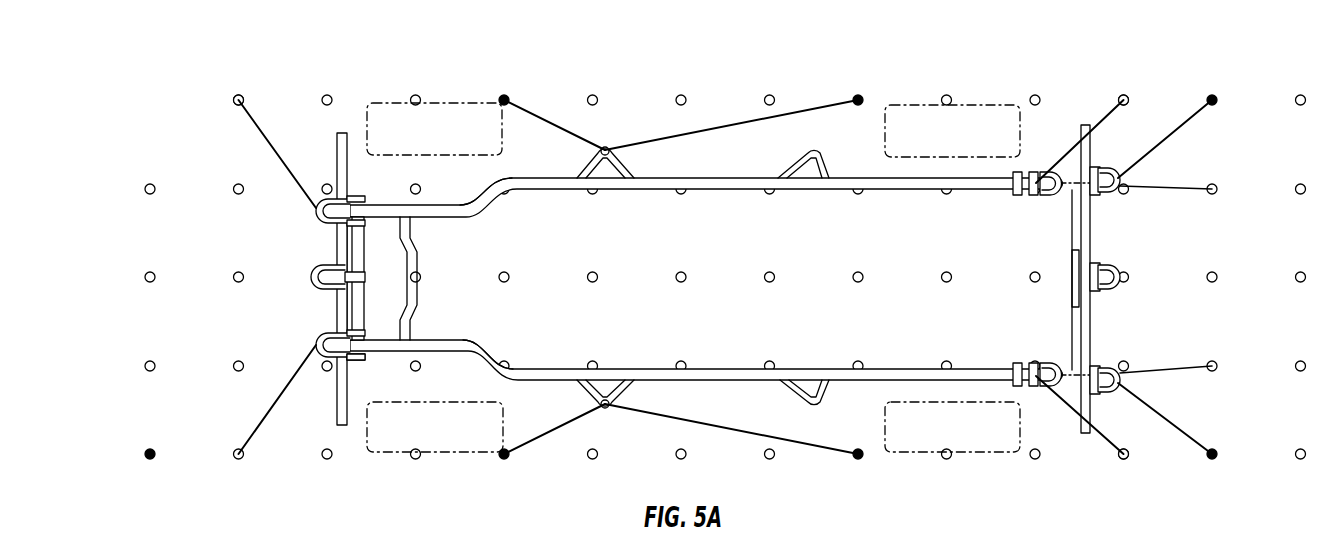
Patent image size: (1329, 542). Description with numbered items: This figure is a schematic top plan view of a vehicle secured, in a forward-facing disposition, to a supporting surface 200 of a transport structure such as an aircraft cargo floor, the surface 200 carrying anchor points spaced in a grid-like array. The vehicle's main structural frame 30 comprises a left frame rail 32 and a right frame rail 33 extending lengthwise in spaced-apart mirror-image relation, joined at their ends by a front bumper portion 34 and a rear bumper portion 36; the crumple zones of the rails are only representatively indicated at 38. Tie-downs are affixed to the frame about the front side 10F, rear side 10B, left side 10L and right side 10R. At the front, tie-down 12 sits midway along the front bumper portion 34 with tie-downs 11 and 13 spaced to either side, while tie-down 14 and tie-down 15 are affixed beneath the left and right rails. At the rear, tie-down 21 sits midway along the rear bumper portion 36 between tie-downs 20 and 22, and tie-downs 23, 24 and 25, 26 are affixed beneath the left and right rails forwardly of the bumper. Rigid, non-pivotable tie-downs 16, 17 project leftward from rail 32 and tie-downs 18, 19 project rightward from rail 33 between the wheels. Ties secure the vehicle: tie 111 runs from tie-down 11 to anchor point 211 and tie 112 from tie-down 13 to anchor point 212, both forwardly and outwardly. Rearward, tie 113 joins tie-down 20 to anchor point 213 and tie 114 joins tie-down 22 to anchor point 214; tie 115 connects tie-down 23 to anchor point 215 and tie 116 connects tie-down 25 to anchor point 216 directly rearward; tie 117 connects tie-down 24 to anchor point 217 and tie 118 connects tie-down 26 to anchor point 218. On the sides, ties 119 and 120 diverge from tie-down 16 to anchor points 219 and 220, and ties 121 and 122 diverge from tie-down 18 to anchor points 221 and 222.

The supporting surface 200 is at (132, 349).
The right side 10R is at (660, 112).
The front side 10F is at (162, 257).
The rear side 10B is at (1167, 257).
The left side 10L is at (645, 465).
The right frame rail 33 is at (884, 181).
The left frame rail 32 is at (898, 375).
The main structural frame 30 is at (738, 372).
The crumple zones 38 is at (470, 228).
The tie-down 15 is at (352, 197).
The front bumper portion 34 is at (338, 400).
The tie-down 13 is at (318, 212).
The tie-down 12 is at (318, 275).
The tie-down 11 is at (318, 340).
The tie-down 14 is at (360, 362).
The rear bumper portion 36 is at (1086, 340).
The tie-down 26 is at (1028, 197).
The tie-down 25 is at (1055, 197).
The tie-down 24 is at (1025, 362).
The tie-down 23 is at (1048, 362).
The tie-down 22 is at (1122, 178).
The tie-down 21 is at (1120, 282).
The tie-down 20 is at (1122, 382).
The tie-down 18 is at (605, 146).
The tie-down 19 is at (818, 149).
The tie-down 16 is at (605, 409).
The tie-down 17 is at (816, 407).
The anchor point 212 is at (234, 102).
The tie 112 is at (285, 164).
The anchor point 211 is at (234, 455).
The tie 111 is at (275, 401).
The anchor point 221 is at (501, 98).
The tie 121 is at (541, 117).
The anchor point 222 is at (855, 97).
The tie 122 is at (690, 131).
The anchor point 218 is at (1121, 96).
The tie 118 is at (1096, 124).
The anchor point 214 is at (1217, 101).
The tie 114 is at (1177, 127).
The anchor point 216 is at (1216, 191).
The tie 116 is at (1150, 189).
The anchor point 215 is at (1216, 365).
The tie 115 is at (1145, 367).
The anchor point 213 is at (1218, 455).
The tie 113 is at (1190, 436).
The anchor point 217 is at (1128, 459).
The tie 117 is at (1100, 434).
The anchor point 219 is at (503, 460).
The tie 119 is at (568, 423).
The anchor point 220 is at (858, 460).
The tie 120 is at (745, 433).